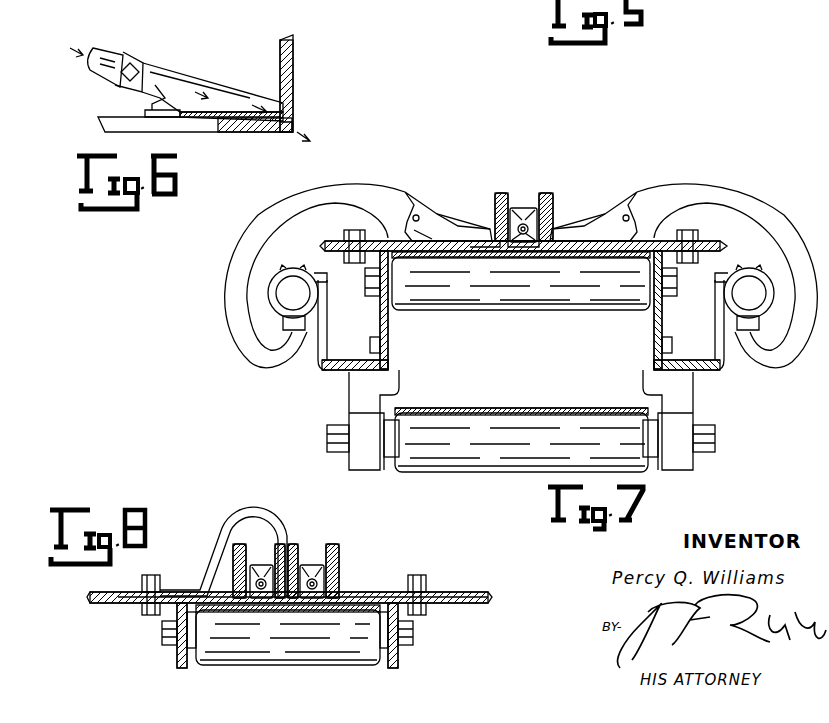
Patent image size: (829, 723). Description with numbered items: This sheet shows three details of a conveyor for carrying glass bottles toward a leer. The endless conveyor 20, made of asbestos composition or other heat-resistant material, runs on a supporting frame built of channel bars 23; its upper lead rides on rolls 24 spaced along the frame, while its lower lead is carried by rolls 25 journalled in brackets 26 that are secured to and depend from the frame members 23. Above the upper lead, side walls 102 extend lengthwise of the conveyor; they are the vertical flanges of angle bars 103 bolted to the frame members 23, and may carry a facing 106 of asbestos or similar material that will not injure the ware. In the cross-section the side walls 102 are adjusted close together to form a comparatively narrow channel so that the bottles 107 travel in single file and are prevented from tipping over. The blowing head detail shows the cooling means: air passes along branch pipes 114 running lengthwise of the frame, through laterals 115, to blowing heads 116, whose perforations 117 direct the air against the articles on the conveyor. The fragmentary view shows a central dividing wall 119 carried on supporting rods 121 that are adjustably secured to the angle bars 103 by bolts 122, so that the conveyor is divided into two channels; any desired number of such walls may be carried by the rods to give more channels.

In FIG. 7, the endless conveyor 20 is at (536, 388).
In FIG. 7, the channel bars 23 is at (392, 304).
In FIG. 7, the rolls 24 is at (586, 302).
In FIG. 8, the rolls 24 is at (260, 648).
In FIG. 7, the rolls 25 is at (468, 466).
In FIG. 7, the brackets 26 is at (400, 382).
In FIG. 6, the side walls 102 is at (294, 64).
In FIG. 7, the side walls 102 is at (500, 210).
In FIG. 8, the side walls 102 is at (236, 555).
In FIG. 7, the angle bars 103 is at (390, 240).
In FIG. 8, the angle bars 103 is at (105, 601).
In FIG. 7, the facing 106 is at (528, 208).
In FIG. 7, the bottles 107 is at (545, 212).
In FIG. 8, the bottles 107 is at (318, 568).
In FIG. 7, the branch pipes 114 is at (285, 293).
In FIG. 7, the laterals 115 is at (285, 220).
In FIG. 6, the blowing heads 116 is at (170, 74).
In FIG. 7, the blowing heads 116 is at (434, 222).
In FIG. 6, the perforations 117 is at (292, 120).
In FIG. 7, the perforations 117 is at (500, 215).
In FIG. 8, the dividing wall 119 is at (290, 545).
In FIG. 8, the supporting rods 121 is at (258, 485).
In FIG. 8, the bolts 122 is at (178, 571).